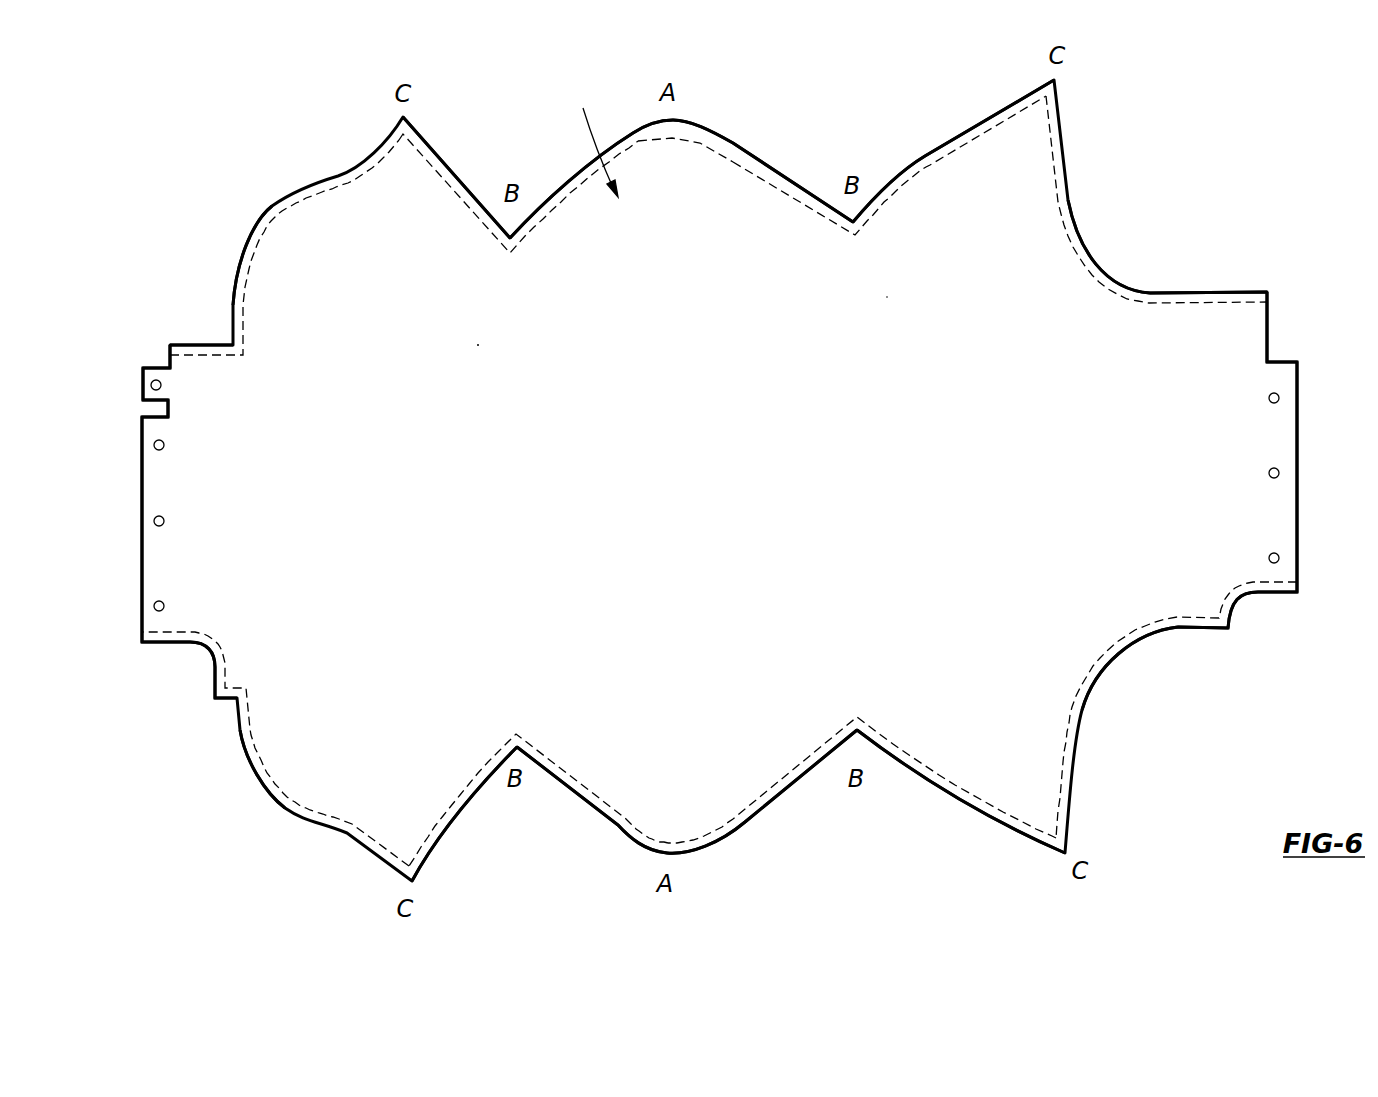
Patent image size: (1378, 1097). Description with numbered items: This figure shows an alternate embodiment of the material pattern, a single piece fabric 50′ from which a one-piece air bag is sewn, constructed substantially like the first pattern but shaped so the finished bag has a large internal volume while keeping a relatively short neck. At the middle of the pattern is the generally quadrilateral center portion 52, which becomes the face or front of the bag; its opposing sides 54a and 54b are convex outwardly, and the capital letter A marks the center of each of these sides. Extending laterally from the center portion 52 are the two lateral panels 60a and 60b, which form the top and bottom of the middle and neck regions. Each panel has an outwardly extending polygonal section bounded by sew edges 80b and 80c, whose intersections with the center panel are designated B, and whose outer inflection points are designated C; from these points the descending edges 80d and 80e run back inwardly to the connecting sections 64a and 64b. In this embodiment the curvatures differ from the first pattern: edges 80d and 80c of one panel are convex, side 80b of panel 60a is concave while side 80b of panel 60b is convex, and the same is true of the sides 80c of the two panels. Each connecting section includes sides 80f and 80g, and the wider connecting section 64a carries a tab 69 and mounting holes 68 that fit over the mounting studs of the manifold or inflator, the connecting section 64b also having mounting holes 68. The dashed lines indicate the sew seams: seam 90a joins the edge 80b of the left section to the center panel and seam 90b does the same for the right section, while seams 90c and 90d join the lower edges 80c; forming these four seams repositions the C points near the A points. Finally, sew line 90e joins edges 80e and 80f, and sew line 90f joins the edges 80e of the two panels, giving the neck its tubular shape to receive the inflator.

The single piece fabric 50′ is at (585, 149).
The center portion 52 is at (661, 677).
The side 54a is at (781, 187).
The side 54b is at (733, 795).
The lateral panel 60a is at (357, 495).
The lateral panel 60b is at (918, 489).
The connecting section 64a is at (194, 493).
The connecting section 64b is at (1193, 429).
The mounting holes 68 is at (166, 443).
The tab 69 is at (153, 380).
The sew edge 80b is at (433, 160).
The sew edge 80c is at (264, 213).
The side 80d is at (1093, 673).
The side 80e is at (1110, 273).
The side 80f is at (1213, 298).
The side 80g is at (1178, 615).
The sew seam 90a is at (637, 141).
The sew seam 90b is at (802, 203).
The sew seam 90c is at (468, 777).
The sew seam 90d is at (778, 772).
The sew line 90e is at (1128, 300).
The sew line 90f is at (1128, 623).